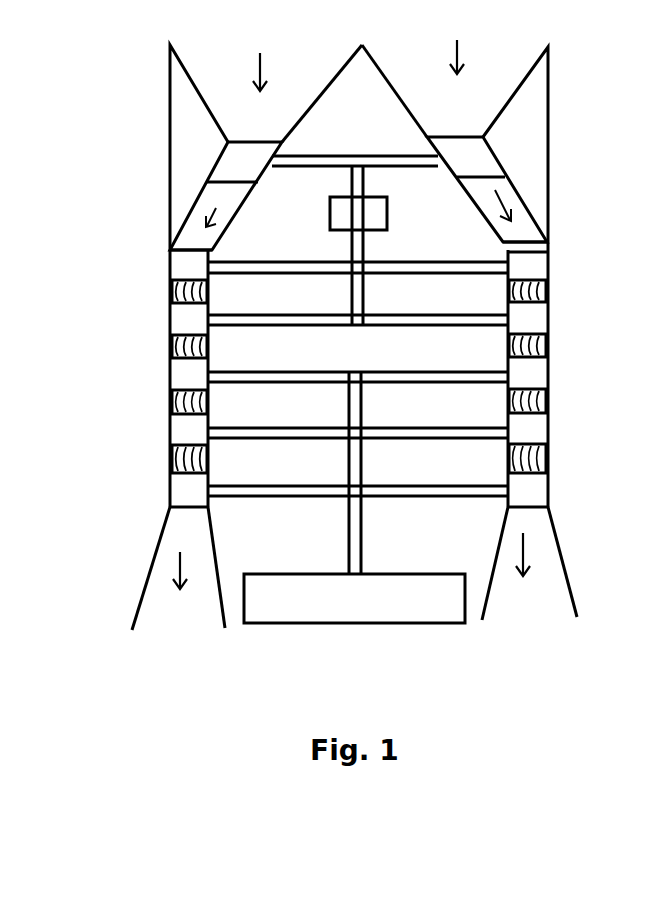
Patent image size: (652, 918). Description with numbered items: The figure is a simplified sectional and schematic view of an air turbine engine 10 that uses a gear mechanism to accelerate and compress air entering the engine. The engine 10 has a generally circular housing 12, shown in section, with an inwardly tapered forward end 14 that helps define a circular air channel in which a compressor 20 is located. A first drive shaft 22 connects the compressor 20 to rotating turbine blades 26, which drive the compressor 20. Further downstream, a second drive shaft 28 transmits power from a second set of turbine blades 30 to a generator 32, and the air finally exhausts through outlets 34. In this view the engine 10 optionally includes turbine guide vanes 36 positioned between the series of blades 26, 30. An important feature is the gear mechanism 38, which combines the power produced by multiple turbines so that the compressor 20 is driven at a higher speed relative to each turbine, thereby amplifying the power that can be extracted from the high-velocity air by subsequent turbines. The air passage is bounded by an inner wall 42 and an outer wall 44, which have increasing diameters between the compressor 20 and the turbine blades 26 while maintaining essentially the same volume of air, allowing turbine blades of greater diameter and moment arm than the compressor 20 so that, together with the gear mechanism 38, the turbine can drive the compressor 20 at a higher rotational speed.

The air turbine engine 10 is at (412, 50).
The housing 12 is at (552, 153).
The inwardly tapered forward end 14 is at (192, 82).
The compressor 20 is at (262, 130).
The first drive shaft 22 is at (365, 155).
The turbine blades 26 is at (167, 257).
The second drive shaft 28 is at (362, 412).
The turbine blades 30 is at (547, 373).
The generator 32 is at (380, 623).
The outlets 34 is at (198, 608).
The turbine guide vanes 36 is at (547, 290).
The gear mechanism 38 is at (387, 213).
The inner wall 42 is at (543, 242).
The outer wall 44 is at (540, 213).